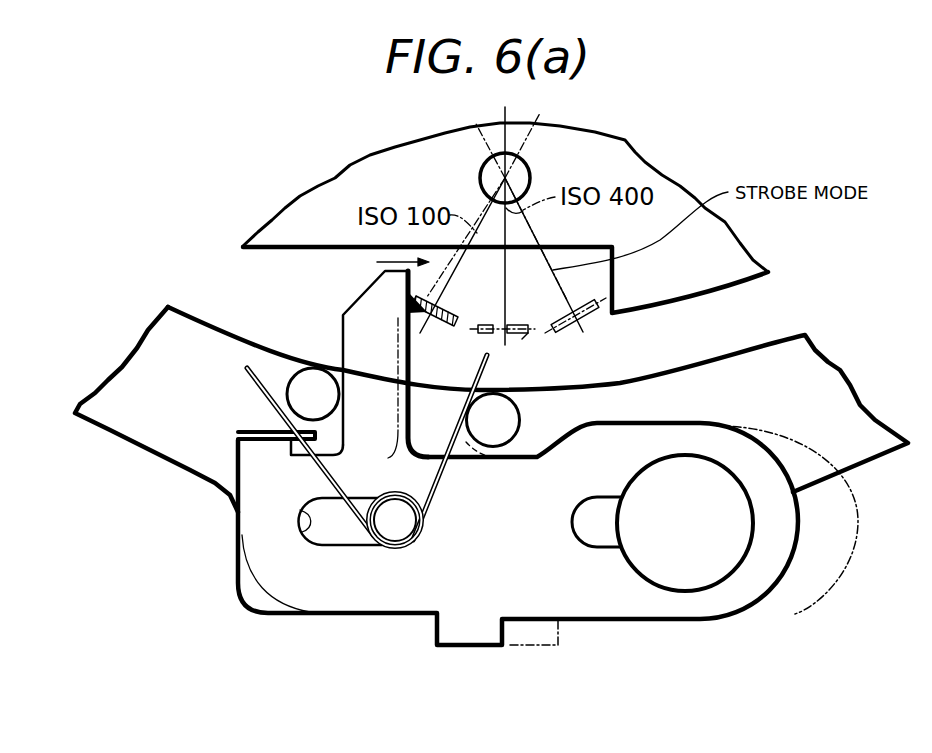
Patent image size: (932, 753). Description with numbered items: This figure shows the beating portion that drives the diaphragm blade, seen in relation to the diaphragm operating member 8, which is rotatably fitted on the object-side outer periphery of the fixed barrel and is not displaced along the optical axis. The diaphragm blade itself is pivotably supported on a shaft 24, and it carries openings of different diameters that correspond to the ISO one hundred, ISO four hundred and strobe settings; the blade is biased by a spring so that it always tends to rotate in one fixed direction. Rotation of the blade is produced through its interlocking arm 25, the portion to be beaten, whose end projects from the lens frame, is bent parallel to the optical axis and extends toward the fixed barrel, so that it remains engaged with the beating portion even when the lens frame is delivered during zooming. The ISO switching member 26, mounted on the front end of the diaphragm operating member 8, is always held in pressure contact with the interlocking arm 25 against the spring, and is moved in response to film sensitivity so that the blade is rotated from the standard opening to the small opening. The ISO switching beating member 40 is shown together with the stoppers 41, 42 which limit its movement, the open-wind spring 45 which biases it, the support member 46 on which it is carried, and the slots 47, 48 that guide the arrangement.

The diaphragm operating member 8 is at (198, 465).
The shaft 24 is at (520, 172).
The interlocking arm 25 is at (450, 326).
The ISO switching member 26 is at (365, 313).
The ISO switching beating member 40 is at (430, 600).
The stopper 41 is at (300, 378).
The stopper 42 is at (498, 435).
The open-wind spring 45 is at (365, 538).
The support member 46 is at (695, 572).
The slot 47 is at (597, 560).
The slot 48 is at (298, 532).